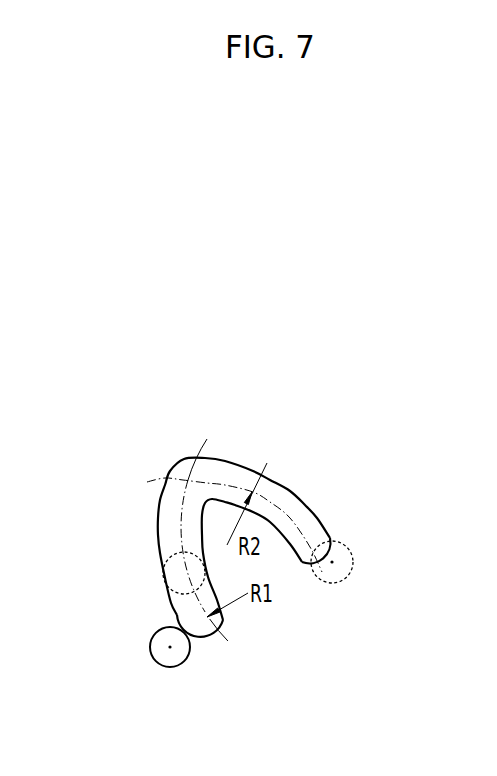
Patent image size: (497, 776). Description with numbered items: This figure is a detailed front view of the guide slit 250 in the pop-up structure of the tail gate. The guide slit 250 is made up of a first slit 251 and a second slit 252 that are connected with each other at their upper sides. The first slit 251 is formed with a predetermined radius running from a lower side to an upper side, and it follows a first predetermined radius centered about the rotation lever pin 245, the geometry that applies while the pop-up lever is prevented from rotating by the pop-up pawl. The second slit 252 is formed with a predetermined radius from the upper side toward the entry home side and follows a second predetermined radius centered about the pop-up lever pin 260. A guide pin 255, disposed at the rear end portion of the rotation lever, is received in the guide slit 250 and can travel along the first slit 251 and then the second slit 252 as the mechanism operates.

The rotation lever pin 245 is at (352, 557).
The guide slit 250 is at (179, 547).
The first slit 251 is at (156, 546).
The second slit 252 is at (203, 503).
The guide pin 255 is at (170, 594).
The pop-up lever pin 260 is at (170, 667).